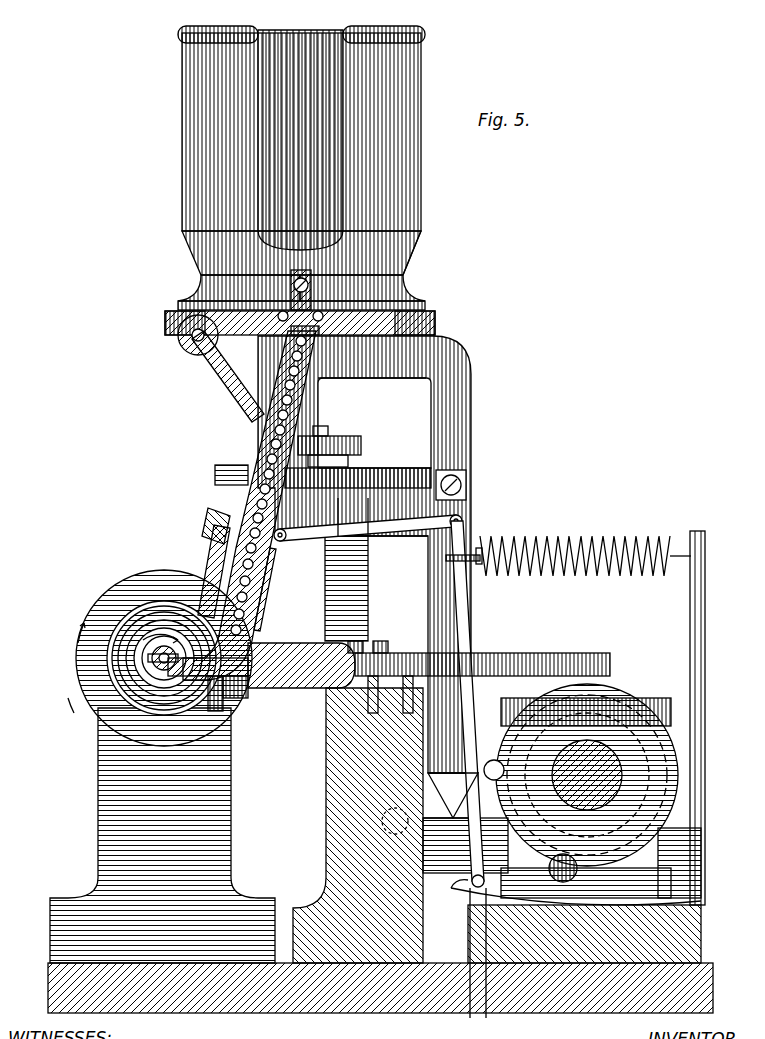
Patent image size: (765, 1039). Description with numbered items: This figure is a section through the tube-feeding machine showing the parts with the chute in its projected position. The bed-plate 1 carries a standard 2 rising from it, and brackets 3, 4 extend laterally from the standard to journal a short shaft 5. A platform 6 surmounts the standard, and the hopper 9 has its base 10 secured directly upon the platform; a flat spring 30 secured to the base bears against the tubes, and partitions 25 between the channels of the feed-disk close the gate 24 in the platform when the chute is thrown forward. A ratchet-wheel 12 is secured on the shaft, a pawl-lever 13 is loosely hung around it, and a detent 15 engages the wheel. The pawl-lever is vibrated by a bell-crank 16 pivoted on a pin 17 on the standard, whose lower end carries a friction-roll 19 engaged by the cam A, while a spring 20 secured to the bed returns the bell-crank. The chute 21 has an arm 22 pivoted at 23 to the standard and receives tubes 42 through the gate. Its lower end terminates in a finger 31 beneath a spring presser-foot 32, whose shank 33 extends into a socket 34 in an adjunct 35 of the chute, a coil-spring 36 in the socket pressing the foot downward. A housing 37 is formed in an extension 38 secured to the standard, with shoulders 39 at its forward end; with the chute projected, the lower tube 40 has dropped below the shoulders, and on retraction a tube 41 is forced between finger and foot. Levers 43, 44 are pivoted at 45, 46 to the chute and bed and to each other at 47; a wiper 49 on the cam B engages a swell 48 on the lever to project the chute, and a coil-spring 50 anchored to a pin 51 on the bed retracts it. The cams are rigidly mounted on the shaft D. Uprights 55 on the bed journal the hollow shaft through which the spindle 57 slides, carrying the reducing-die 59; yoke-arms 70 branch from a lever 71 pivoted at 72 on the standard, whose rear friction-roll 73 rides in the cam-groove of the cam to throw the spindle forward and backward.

The bed-plate 1 is at (358, 990).
The standard 2 is at (455, 420).
The bracket 3 is at (398, 350).
The bracket 4 is at (400, 500).
The short shaft 5 is at (320, 326).
The platform 6 is at (427, 315).
The hopper 9 is at (301, 168).
The hopper-base 10 is at (398, 276).
The ratchet-wheel 12 is at (207, 465).
The pawl-lever 13 is at (340, 440).
The detent 15 is at (378, 470).
The bell-crank 16 is at (355, 590).
The pin 17 is at (375, 812).
The friction-roll 19 is at (560, 857).
The spring 20 is at (525, 880).
The chute 21 is at (280, 415).
The arm 22 is at (240, 380).
The pivot 23 is at (172, 336).
The gate 24 is at (312, 314).
The partition 25 is at (205, 278).
The flat spring 30 is at (302, 282).
The finger 31 is at (150, 660).
The spring presser-foot 32 is at (90, 610).
The shank 33 is at (150, 625).
The socket 34 is at (185, 575).
The adjunct 35 is at (205, 520).
The coil-spring 36 is at (210, 560).
The housing 37 is at (248, 650).
The extension 38 is at (296, 636).
The shoulders 39 is at (238, 680).
The tube 40 is at (215, 690).
The tube 41 is at (152, 652).
The tubes 42 is at (246, 560).
The lever 43 is at (372, 530).
The lever 44 is at (462, 625).
The pivot 45 is at (278, 533).
The pivot 46 is at (468, 1000).
The pivot 47 is at (456, 512).
The swell 48 is at (453, 795).
The wiper 49 is at (490, 760).
The coil-spring 50 is at (615, 530).
The pin 51 is at (698, 655).
The uprights 55 is at (162, 835).
The spindle 57 is at (134, 650).
The reducing-die 59 is at (140, 650).
The yoke-arms 70 is at (150, 606).
The lever 71 is at (490, 650).
The pivot 72 is at (375, 636).
The friction-roll 73 is at (600, 690).
The cam A is at (665, 742).
The cam B is at (610, 700).
The shaft D is at (600, 776).